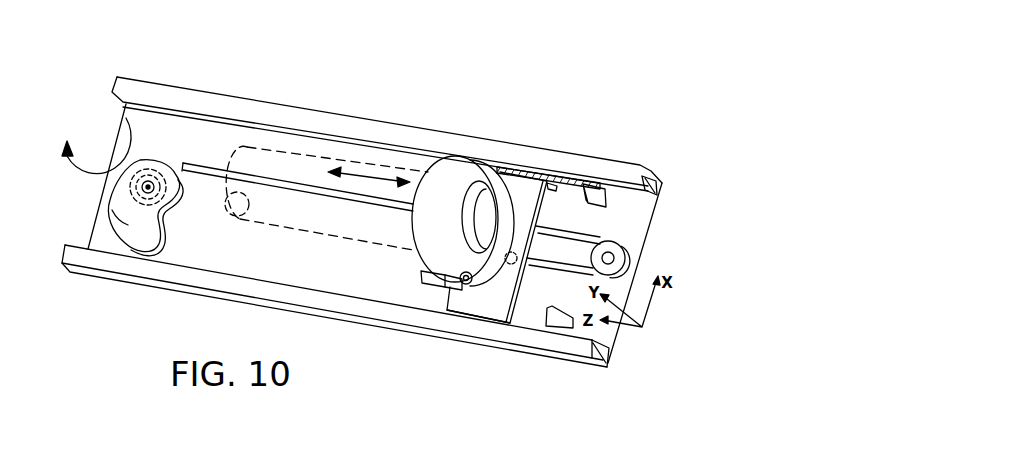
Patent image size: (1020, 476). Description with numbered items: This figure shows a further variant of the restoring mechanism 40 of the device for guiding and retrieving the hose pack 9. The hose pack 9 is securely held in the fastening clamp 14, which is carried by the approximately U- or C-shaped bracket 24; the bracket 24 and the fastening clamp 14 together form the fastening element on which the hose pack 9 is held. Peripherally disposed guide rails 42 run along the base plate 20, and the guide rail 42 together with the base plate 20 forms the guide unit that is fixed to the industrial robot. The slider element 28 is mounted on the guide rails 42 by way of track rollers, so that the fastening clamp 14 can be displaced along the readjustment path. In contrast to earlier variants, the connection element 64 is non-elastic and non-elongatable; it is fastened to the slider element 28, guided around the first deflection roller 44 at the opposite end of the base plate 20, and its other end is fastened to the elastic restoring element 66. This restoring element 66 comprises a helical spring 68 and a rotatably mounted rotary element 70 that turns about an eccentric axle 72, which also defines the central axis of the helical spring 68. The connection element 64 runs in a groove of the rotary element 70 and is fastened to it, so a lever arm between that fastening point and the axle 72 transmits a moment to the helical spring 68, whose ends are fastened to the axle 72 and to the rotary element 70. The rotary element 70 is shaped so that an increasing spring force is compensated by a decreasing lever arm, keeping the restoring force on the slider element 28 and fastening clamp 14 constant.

The hose pack 9 is at (324, 233).
The fastening clamp 14 is at (442, 155).
The base plate 20 is at (650, 233).
The bracket 24 is at (118, 244).
The slider element 28 is at (534, 163).
The restoring mechanism 40 is at (704, 132).
The guide rail 42 is at (647, 175).
The first deflection roller 44 is at (614, 243).
The connection element 64 is at (203, 165).
The elastic restoring element 66 is at (185, 212).
The helical spring 68 is at (148, 181).
The rotary element 70 is at (118, 215).
The eccentric axle 72 is at (91, 157).